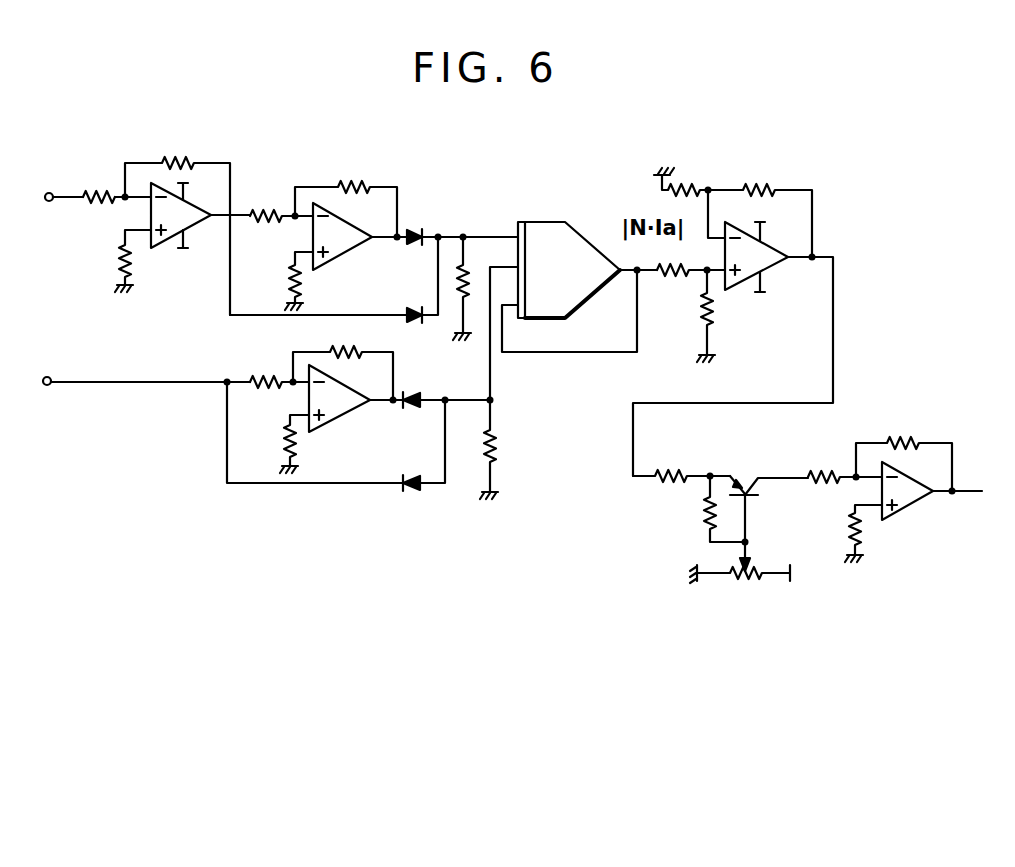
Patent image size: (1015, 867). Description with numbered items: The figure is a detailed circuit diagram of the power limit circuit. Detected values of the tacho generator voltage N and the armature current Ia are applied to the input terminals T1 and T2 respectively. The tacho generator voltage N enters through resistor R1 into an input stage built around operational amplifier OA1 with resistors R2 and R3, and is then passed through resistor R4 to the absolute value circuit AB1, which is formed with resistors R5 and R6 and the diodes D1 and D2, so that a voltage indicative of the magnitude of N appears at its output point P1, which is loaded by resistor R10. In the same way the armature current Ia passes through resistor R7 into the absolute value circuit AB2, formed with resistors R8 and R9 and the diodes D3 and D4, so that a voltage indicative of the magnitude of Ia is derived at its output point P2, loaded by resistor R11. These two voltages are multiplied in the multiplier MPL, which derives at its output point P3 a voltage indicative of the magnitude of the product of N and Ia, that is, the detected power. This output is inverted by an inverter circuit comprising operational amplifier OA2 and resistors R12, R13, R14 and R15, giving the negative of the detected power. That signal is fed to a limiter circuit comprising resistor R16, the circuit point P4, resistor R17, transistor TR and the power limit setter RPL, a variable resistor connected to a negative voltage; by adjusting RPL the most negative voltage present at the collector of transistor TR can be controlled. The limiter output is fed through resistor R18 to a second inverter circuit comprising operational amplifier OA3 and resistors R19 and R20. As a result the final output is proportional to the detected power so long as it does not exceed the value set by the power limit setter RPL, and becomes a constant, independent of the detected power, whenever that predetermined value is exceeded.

The input terminal T1 is at (49, 202).
The input terminal T2 is at (47, 386).
The tacho generator voltage N is at (55, 176).
The armature current Ia is at (63, 401).
The resistor R1 is at (116, 211).
The resistor R2 is at (116, 261).
The resistor R3 is at (177, 226).
The resistor R4 is at (281, 206).
The resistor R5 is at (285, 281).
The resistor R6 is at (346, 198).
The resistor R7 is at (263, 374).
The resistor R8 is at (279, 444).
The resistor R9 is at (343, 363).
The resistor R10 is at (455, 300).
The resistor R11 is at (506, 449).
The resistor R12 is at (687, 260).
The resistor R13 is at (683, 194).
The resistor R14 is at (682, 316).
The resistor R15 is at (762, 212).
The resistor R16 is at (681, 463).
The resistor R17 is at (705, 511).
The resistor R18 is at (843, 465).
The resistor R19 is at (843, 533).
The resistor R20 is at (906, 454).
The operational amplifier OA1 is at (167, 250).
The operational amplifier OA2 is at (736, 291).
The operational amplifier OA3 is at (915, 500).
The absolute value circuit AB1 is at (360, 249).
The absolute value circuit AB2 is at (340, 422).
The diode D1 is at (458, 224).
The diode D2 is at (334, 280).
The diode D3 is at (443, 387).
The diode D4 is at (336, 436).
The output point P1 is at (439, 232).
The output point P2 is at (493, 408).
The output point P3 is at (632, 275).
The circuit point P4 is at (710, 474).
The multiplier MPL is at (573, 311).
The transistor TR is at (769, 509).
The power limit setter RPL is at (752, 590).